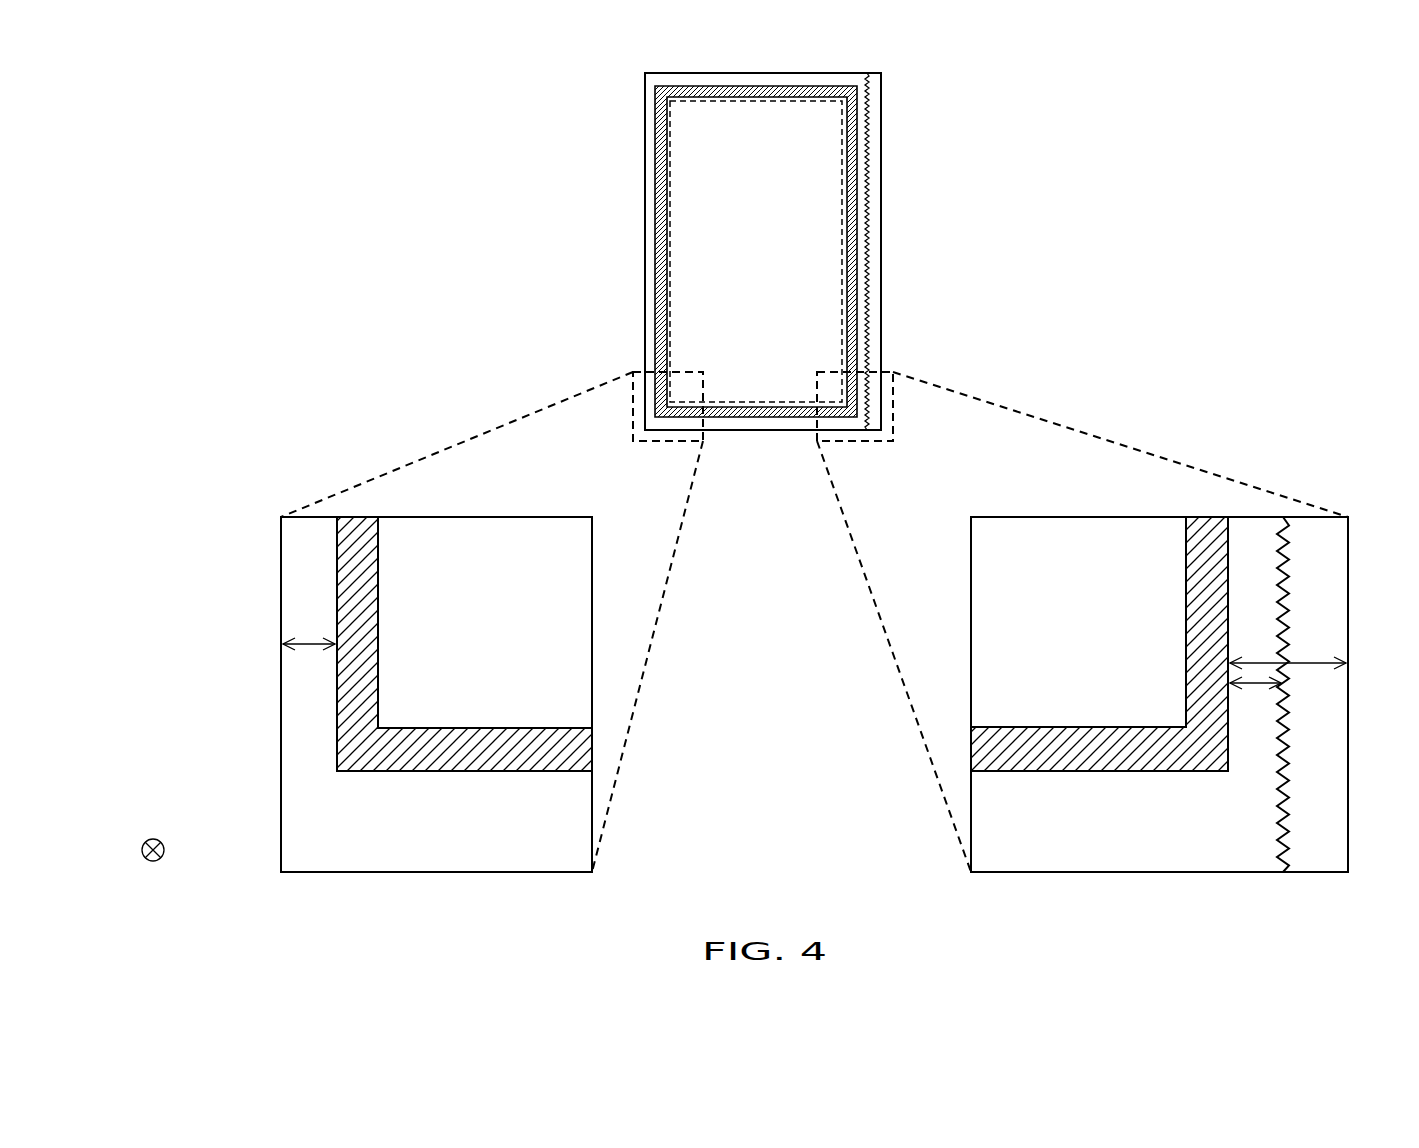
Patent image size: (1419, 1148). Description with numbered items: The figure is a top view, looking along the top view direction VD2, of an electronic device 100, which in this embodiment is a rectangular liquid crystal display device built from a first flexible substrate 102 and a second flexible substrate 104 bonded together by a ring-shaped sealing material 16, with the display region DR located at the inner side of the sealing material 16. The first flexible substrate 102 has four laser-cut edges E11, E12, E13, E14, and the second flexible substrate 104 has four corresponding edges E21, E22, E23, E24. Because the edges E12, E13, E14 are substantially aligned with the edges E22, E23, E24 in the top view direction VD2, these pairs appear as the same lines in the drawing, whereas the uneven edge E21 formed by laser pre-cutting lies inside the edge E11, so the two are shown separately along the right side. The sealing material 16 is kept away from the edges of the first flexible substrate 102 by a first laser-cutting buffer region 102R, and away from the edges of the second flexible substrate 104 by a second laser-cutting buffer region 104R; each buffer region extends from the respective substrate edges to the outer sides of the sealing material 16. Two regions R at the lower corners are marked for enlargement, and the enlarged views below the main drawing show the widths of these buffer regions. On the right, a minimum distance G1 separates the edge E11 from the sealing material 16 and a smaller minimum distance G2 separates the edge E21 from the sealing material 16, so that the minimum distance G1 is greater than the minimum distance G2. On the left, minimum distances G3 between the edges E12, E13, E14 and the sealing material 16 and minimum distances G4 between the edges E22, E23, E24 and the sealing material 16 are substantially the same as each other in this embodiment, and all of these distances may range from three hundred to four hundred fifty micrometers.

The electronic device 100 is at (907, 100).
The edge of first flexible substrate E11 is at (881, 183).
The edge of second flexible substrate E21 is at (868, 237).
The edge of first flexible substrate E12 is at (395, 538).
The edge of second flexible substrate E22 is at (645, 220).
The edge of first flexible substrate E13 is at (690, 229).
The edge of second flexible substrate E23 is at (677, 73).
The edge of first flexible substrate E14 is at (959, 666).
The edge of second flexible substrate E24 is at (763, 430).
The display region DR is at (668, 268).
The region R is at (893, 428).
The sealing material 16 is at (1205, 597).
The minimum distance G1 is at (1305, 660).
The minimum distance G2 is at (1262, 686).
The minimum distance G3 is at (250, 627).
The minimum distance G4 is at (312, 643).
The first flexible substrate 102 is at (1348, 568).
The second flexible substrate 104 is at (1283, 745).
The first laser-cutting buffer region 102R is at (1318, 555).
The second laser-cutting buffer region 104R is at (1250, 543).
The top view direction VD2 is at (124, 852).